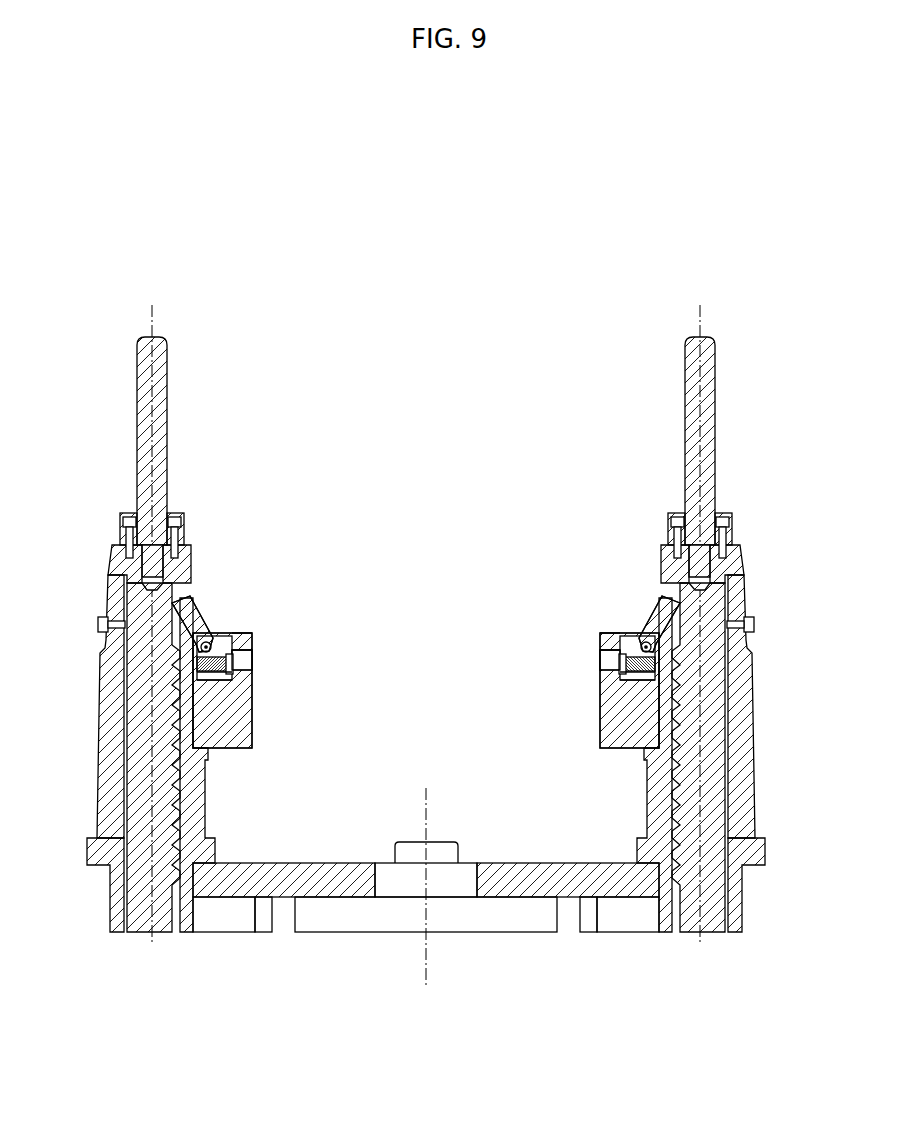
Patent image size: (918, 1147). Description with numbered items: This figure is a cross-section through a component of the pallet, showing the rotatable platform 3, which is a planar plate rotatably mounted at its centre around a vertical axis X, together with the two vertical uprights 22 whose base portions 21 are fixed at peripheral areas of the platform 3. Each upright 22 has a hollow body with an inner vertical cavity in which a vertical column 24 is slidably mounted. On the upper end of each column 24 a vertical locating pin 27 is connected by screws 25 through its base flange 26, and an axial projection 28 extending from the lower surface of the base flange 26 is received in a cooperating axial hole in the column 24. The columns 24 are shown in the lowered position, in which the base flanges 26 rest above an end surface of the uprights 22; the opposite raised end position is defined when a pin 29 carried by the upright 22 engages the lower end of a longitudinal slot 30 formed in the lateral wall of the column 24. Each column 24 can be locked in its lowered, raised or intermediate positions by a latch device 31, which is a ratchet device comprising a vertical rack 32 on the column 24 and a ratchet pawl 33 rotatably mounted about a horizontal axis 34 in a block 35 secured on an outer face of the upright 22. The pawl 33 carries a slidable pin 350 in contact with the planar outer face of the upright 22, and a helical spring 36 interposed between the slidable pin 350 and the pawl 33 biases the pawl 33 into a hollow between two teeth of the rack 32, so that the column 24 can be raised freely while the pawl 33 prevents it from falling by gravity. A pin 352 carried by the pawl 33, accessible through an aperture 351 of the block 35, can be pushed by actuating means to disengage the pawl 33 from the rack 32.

The rotatable platform 3 is at (488, 863).
The base portion 21 is at (225, 858).
The vertical upright 22 is at (103, 715).
The vertical column 24 is at (160, 805).
The screws 25 is at (123, 535).
The base flange 26 is at (185, 515).
The vertical locating pin 27 is at (168, 375).
The axial projection 28 is at (135, 575).
The pin 29 is at (100, 628).
The longitudinal slot 30 is at (104, 805).
The latch device 31 is at (224, 616).
The vertical rack 32 is at (205, 775).
The ratchet pawl 33 is at (197, 617).
The horizontal axis 34 is at (240, 640).
The block 35 is at (240, 735).
The helical spring 36 is at (215, 680).
The slidable pin 350 is at (215, 668).
The aperture 351 is at (252, 660).
The pin 352 is at (234, 664).
The vertical axis X is at (426, 822).